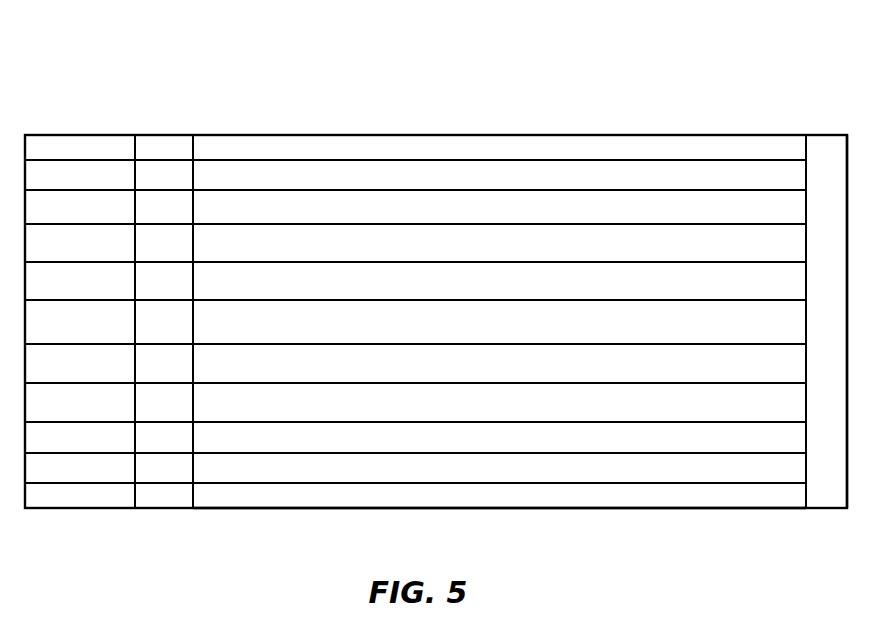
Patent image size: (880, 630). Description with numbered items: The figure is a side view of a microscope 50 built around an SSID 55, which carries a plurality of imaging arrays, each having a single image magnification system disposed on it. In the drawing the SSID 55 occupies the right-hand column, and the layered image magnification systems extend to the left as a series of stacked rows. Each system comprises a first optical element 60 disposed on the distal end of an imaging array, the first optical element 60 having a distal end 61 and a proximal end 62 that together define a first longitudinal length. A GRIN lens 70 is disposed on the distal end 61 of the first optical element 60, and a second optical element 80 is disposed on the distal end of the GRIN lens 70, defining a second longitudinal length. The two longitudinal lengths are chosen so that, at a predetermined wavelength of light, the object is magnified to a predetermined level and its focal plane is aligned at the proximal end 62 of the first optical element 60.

The microscope 50 is at (588, 118).
The SSID 55 is at (823, 475).
The first optical element 60 is at (329, 177).
The distal end 61 is at (207, 498).
The proximal end 62 is at (791, 497).
The GRIN lens 70 is at (170, 148).
The second optical element 80 is at (73, 148).